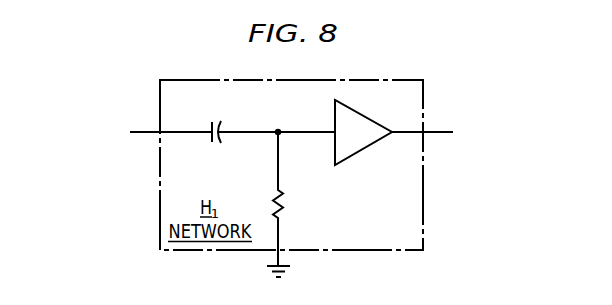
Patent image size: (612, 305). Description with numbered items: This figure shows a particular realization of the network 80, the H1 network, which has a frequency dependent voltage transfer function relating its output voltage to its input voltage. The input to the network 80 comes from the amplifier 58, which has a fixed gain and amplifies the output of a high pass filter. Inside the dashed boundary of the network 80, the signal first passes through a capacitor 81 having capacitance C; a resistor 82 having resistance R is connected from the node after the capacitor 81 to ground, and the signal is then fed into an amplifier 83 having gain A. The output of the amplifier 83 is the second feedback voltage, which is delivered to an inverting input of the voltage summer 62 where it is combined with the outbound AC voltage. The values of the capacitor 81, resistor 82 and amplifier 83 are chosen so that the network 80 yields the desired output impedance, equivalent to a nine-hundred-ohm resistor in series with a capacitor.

The amplifier 58 is at (123, 133).
The voltage summer 62 is at (462, 131).
The network 80 is at (199, 61).
The capacitor 81 is at (218, 120).
The resistor 82 is at (288, 207).
The amplifier 83 is at (357, 141).